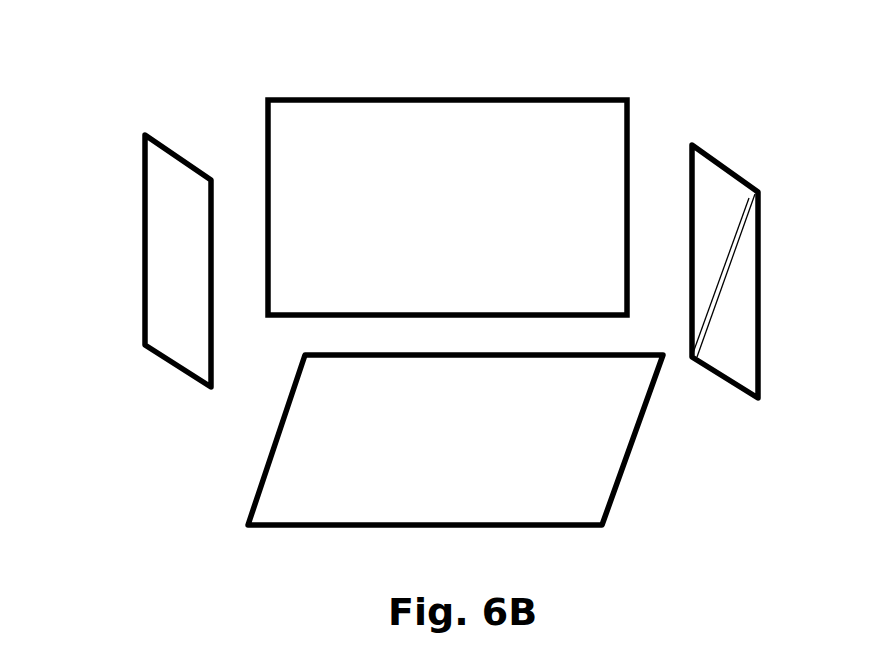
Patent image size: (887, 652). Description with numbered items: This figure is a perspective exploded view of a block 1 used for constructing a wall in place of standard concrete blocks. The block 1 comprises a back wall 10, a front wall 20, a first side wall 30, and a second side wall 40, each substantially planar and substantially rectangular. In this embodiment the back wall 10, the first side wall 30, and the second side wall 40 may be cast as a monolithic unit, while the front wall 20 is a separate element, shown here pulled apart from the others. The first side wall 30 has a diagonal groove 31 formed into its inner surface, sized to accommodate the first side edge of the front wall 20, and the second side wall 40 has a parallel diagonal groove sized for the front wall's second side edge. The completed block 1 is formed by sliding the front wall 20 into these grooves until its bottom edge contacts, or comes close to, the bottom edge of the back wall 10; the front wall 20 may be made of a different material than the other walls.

The block 1 is at (164, 84).
The back wall 10 is at (426, 100).
The front wall 20 is at (623, 476).
The first side wall 30 is at (762, 288).
The diagonal groove 31 is at (742, 243).
The second side wall 40 is at (143, 231).